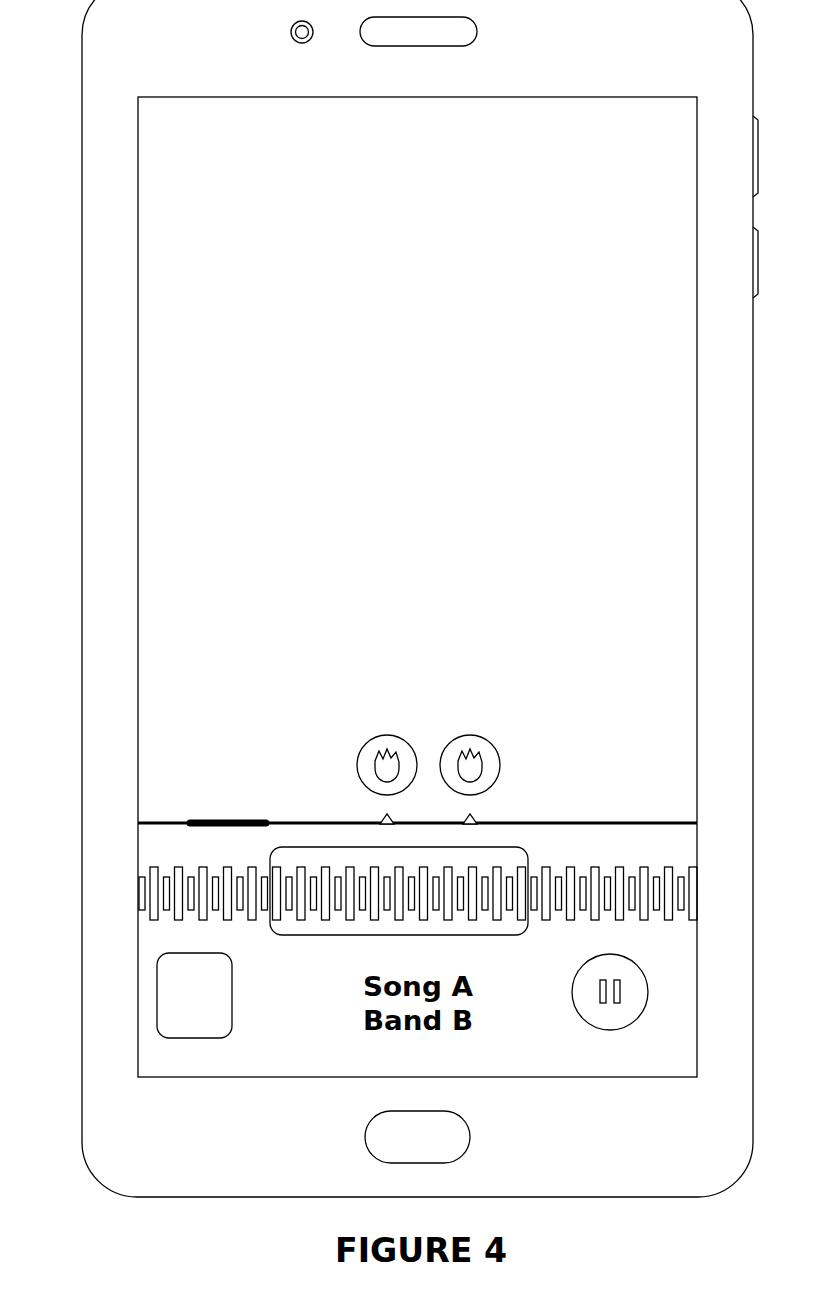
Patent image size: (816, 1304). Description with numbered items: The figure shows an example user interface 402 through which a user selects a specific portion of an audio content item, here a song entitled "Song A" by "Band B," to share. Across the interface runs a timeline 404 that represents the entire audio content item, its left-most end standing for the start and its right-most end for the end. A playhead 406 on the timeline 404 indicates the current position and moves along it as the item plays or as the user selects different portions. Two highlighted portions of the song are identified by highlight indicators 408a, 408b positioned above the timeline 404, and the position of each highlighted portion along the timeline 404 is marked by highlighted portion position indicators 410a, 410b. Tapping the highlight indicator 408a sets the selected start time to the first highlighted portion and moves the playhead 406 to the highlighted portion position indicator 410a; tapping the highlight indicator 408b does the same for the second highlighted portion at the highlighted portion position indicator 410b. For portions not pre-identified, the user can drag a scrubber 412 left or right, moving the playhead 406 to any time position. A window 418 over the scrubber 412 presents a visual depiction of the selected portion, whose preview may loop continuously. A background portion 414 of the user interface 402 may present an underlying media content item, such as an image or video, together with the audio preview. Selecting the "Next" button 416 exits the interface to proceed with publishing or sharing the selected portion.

The user interface 402 is at (193, 150).
The timeline 404 is at (657, 810).
The playhead 406 is at (216, 808).
The highlight indicator 408a is at (387, 731).
The highlight indicator 408b is at (470, 731).
The highlighted portion position indicator 410a is at (371, 811).
The highlighted portion position indicator 410b is at (483, 811).
The scrubber 412 is at (125, 890).
The background portion 414 is at (388, 421).
The "Next" button 416 is at (590, 195).
The window 418 is at (331, 942).